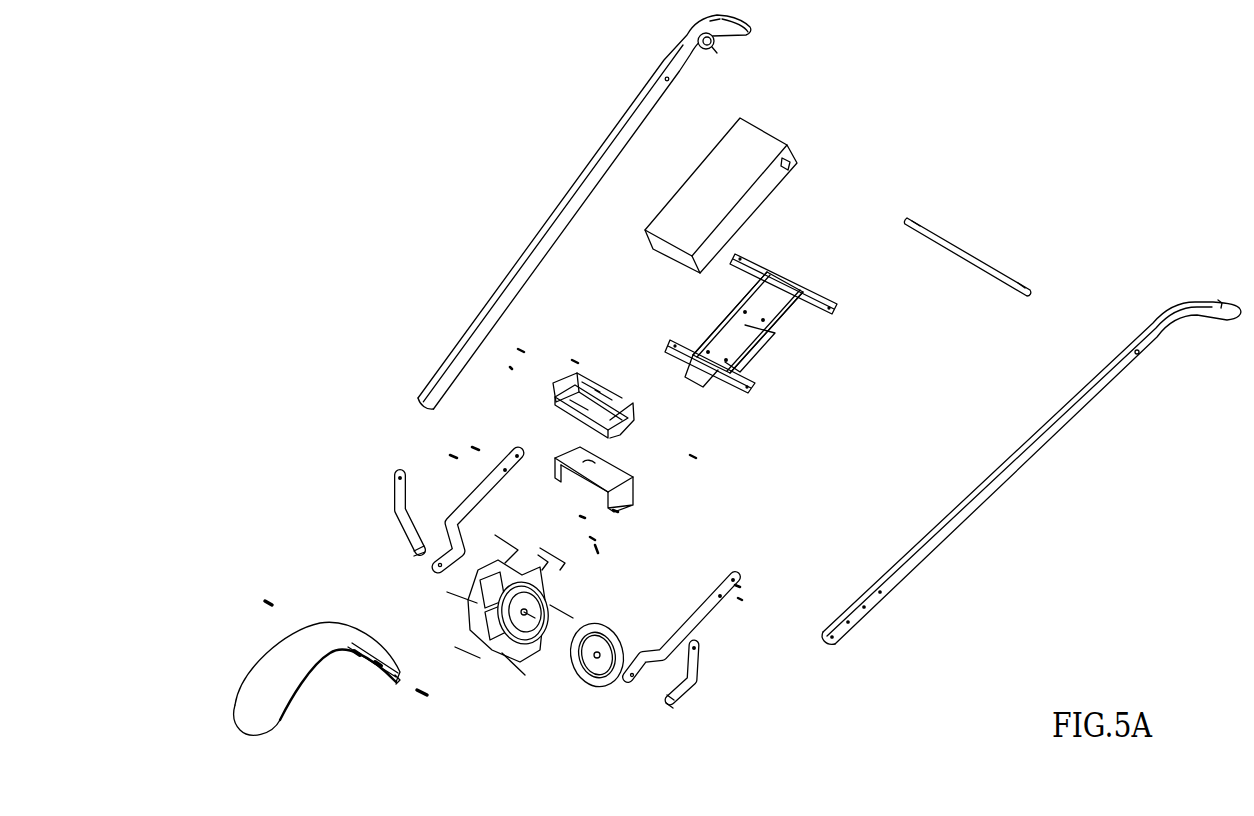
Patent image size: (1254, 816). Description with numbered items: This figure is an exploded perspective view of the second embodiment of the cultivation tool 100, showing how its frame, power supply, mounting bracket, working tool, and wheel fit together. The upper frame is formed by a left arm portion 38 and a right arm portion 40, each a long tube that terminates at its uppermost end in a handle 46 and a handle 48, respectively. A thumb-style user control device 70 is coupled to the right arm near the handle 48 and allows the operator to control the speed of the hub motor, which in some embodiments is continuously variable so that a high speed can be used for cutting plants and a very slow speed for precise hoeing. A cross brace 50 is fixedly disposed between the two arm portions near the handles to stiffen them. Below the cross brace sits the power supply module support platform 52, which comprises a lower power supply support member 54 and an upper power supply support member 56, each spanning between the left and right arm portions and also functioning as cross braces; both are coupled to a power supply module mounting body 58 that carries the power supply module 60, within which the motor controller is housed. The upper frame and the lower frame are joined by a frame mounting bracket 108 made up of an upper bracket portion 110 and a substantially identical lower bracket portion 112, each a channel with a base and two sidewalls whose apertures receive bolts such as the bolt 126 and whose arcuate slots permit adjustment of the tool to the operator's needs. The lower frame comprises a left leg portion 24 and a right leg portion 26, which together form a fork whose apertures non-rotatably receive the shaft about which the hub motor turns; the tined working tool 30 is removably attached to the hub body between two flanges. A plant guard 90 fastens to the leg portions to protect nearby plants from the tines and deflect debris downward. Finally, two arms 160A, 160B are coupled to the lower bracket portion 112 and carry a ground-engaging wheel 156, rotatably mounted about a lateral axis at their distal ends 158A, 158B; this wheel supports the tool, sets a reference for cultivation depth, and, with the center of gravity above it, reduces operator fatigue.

The cultivation tool 100 is at (440, 159).
The right arm portion 40 is at (576, 186).
The handle 48 is at (752, 25).
The user control device 70 is at (694, 26).
The left arm portion 38 is at (1030, 460).
The handle 46 is at (1219, 300).
The power supply module 60 is at (712, 166).
The cross brace 50 is at (962, 252).
The power supply module support platform 52 is at (772, 341).
The power supply module mounting body 58 is at (716, 326).
The upper power supply support member 56 is at (816, 302).
The lower power supply support member 54 is at (727, 390).
The upper bracket portion 110 is at (578, 370).
The bolt 126 is at (594, 414).
The frame mounting bracket 108 is at (646, 492).
The lower bracket portion 112 is at (665, 514).
The right leg portion 26 is at (487, 488).
The arm 160B is at (403, 528).
The distal end 158B is at (414, 555).
The plant guard 90 is at (290, 652).
The working tool 30 is at (478, 685).
The ground-engaging wheel 156 is at (584, 682).
The left leg portion 24 is at (716, 615).
The arm 160A is at (688, 695).
The distal end 158A is at (676, 708).